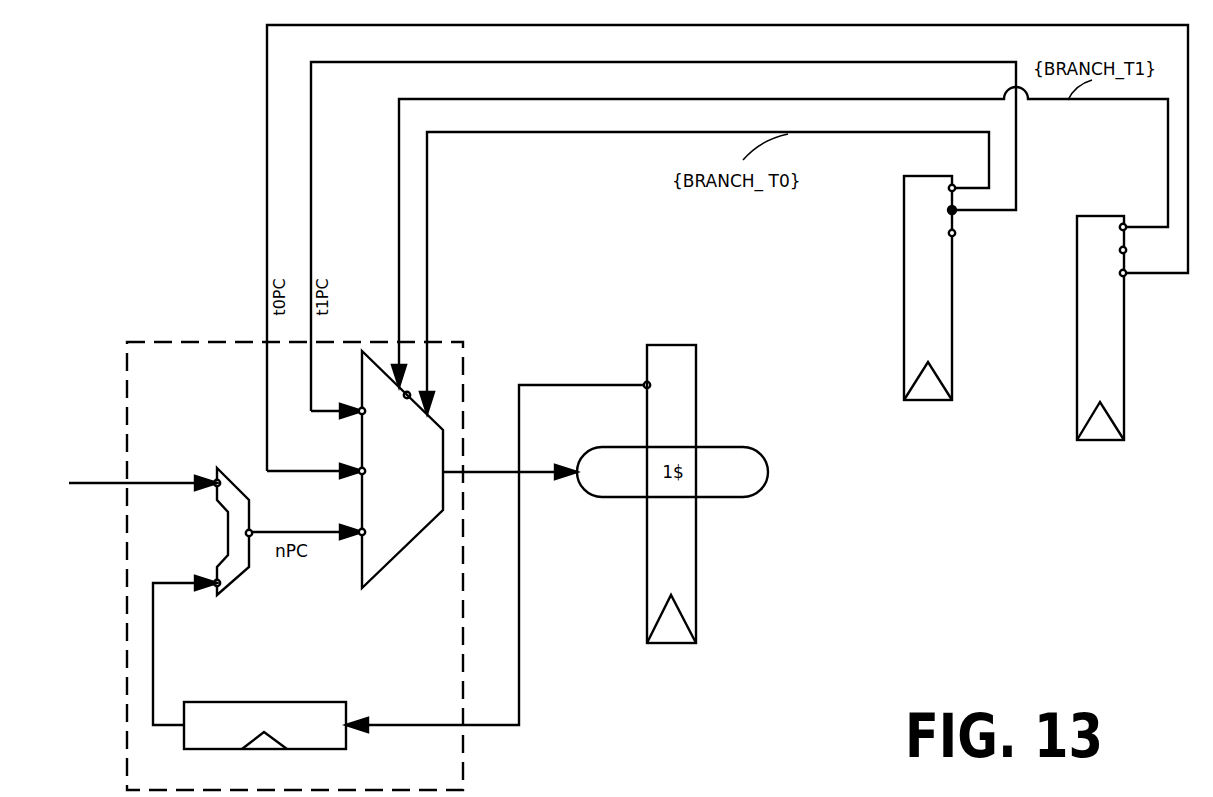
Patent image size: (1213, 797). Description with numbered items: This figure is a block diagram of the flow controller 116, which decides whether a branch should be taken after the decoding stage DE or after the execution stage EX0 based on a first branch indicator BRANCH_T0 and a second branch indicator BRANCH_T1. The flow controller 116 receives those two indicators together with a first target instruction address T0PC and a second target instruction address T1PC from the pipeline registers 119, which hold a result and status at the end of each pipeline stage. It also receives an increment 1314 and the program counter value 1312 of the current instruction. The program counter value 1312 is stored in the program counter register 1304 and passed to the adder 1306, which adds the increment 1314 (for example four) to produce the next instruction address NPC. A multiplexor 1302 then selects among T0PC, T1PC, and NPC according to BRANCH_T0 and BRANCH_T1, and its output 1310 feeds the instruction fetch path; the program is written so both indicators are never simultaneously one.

The flow controller 116 is at (463, 762).
The pipeline registers 119 is at (696, 560).
The multiplexor 1302 is at (415, 540).
The program counter register 1304 is at (303, 700).
The adder 1306 is at (238, 575).
The fetch address output line 1310 is at (482, 472).
The program counter value 1312 is at (519, 612).
The increment 1314 is at (108, 483).